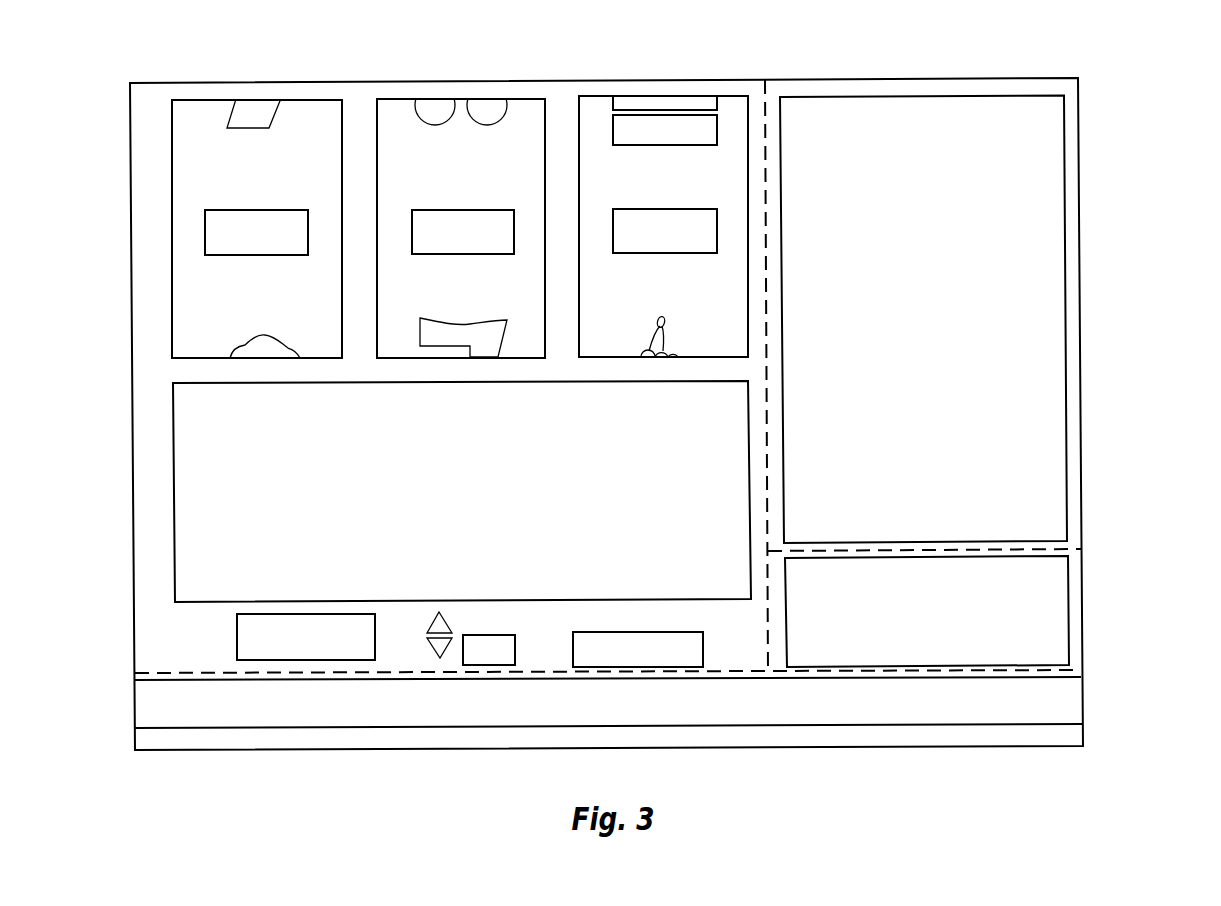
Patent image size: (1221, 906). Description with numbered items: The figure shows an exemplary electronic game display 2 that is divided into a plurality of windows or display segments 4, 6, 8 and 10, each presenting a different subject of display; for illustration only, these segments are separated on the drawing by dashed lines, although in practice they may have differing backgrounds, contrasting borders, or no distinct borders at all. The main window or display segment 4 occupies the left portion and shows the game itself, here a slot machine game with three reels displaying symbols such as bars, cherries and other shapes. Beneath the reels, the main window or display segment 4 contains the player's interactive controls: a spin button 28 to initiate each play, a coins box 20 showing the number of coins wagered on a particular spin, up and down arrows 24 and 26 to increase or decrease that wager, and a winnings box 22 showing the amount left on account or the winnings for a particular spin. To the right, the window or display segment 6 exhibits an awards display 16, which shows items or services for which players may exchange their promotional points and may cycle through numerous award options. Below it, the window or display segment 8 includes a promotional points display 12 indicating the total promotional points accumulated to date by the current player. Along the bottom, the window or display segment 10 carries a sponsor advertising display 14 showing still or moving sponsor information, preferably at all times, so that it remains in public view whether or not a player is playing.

The game display 2 is at (668, 61).
The main window or display segment 4 is at (747, 86).
The window or display segment 6 is at (923, 286).
The window or display segment 8 is at (984, 600).
The window or display segment 10 is at (1078, 670).
The promotional points display 12 is at (1052, 613).
The sponsor advertising display 14 is at (577, 717).
The awards display 16 is at (912, 301).
The coins box 20 is at (477, 661).
The winnings box 22 is at (624, 661).
The up arrow 24 is at (437, 620).
The down arrow 26 is at (430, 645).
The spin button 28 is at (250, 645).